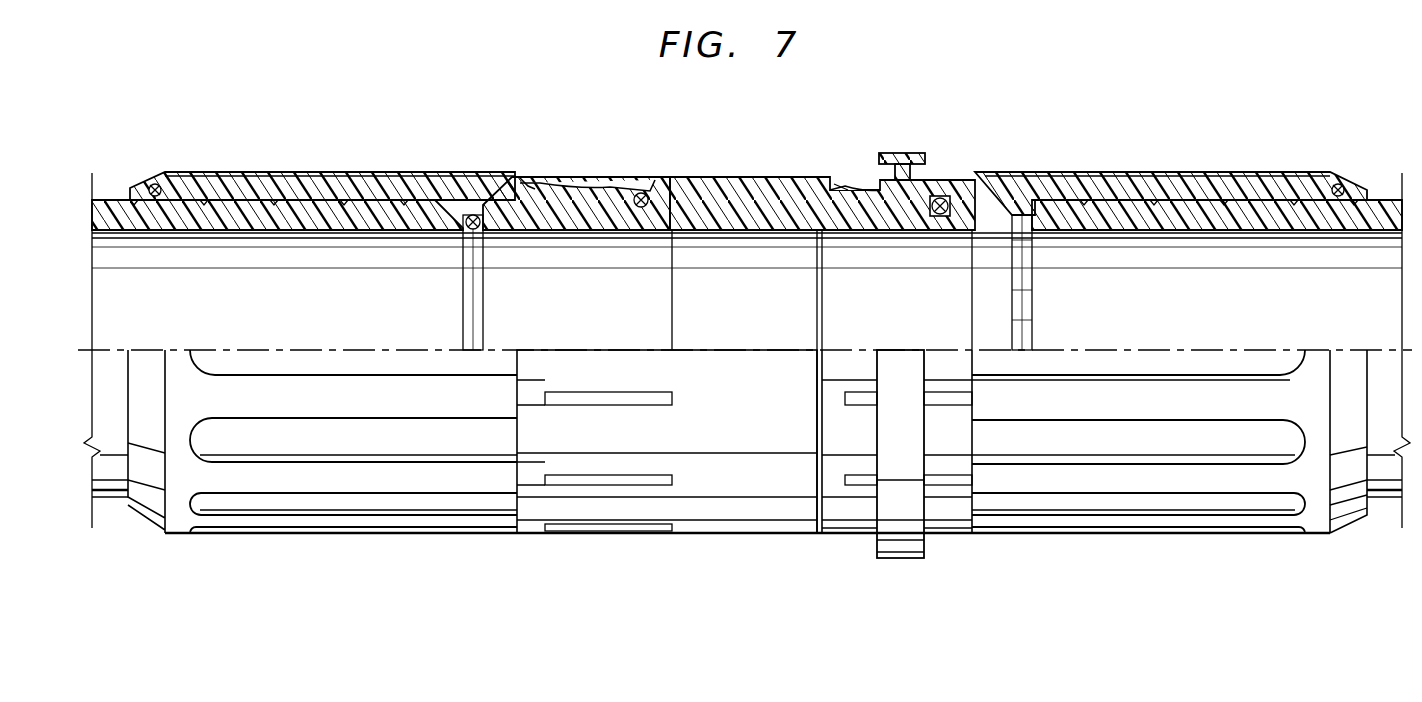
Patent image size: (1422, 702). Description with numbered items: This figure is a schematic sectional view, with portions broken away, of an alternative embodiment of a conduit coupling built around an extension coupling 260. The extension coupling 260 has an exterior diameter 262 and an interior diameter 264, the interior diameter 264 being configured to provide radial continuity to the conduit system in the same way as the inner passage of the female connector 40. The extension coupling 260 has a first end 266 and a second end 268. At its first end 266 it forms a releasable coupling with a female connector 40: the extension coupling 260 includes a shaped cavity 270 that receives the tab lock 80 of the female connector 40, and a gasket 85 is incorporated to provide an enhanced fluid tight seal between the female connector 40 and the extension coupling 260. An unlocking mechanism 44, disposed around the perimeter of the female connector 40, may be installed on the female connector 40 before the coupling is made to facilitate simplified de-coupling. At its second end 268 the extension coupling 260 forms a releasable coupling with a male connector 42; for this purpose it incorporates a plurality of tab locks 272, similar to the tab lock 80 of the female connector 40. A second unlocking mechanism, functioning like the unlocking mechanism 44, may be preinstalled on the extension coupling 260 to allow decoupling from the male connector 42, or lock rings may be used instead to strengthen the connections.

The female connector 40 is at (1142, 170).
The male connector 42 is at (290, 168).
The unlocking mechanism 44 is at (902, 563).
The tab lock 80 is at (930, 178).
The gasket 85 is at (939, 216).
The extension coupling 260 is at (774, 174).
The exterior diameter 262 is at (680, 180).
The interior diameter 264 is at (770, 232).
The first end 266 is at (898, 228).
The second end 268 is at (713, 232).
The shaped cavity 270 is at (842, 196).
The tab locks 272 is at (590, 184).